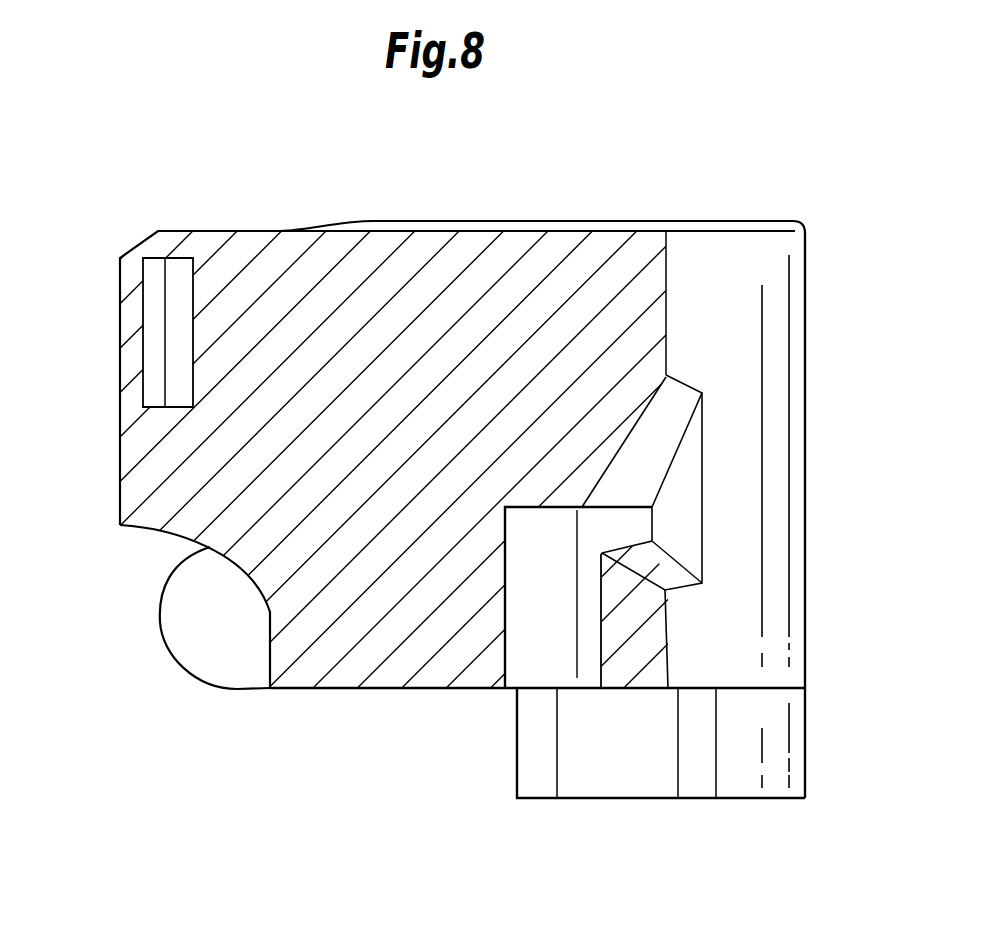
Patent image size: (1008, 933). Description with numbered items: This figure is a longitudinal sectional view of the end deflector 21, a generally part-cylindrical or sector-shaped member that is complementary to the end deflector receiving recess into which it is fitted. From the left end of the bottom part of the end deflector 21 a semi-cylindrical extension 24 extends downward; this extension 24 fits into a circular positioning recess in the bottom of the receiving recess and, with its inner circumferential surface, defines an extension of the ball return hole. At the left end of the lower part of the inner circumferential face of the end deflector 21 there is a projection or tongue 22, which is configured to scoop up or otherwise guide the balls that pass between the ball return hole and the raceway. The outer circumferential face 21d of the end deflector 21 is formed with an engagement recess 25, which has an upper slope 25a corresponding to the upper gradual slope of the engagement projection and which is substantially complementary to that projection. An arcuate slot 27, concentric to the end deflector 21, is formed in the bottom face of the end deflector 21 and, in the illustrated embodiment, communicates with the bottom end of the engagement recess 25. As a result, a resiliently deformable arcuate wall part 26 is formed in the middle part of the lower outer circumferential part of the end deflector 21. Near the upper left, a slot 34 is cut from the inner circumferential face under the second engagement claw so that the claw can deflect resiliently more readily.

The end deflector 21 is at (327, 210).
The outer circumferential face 21d is at (795, 248).
The tongue 22 is at (192, 653).
The semi-cylindrical extension 24 is at (523, 758).
The engagement recess 25 is at (680, 511).
The upper slope 25a is at (668, 428).
The resiliently deformable arcuate wall part 26 is at (660, 662).
The arcuate slot 27 is at (547, 613).
The slot 34 is at (180, 315).